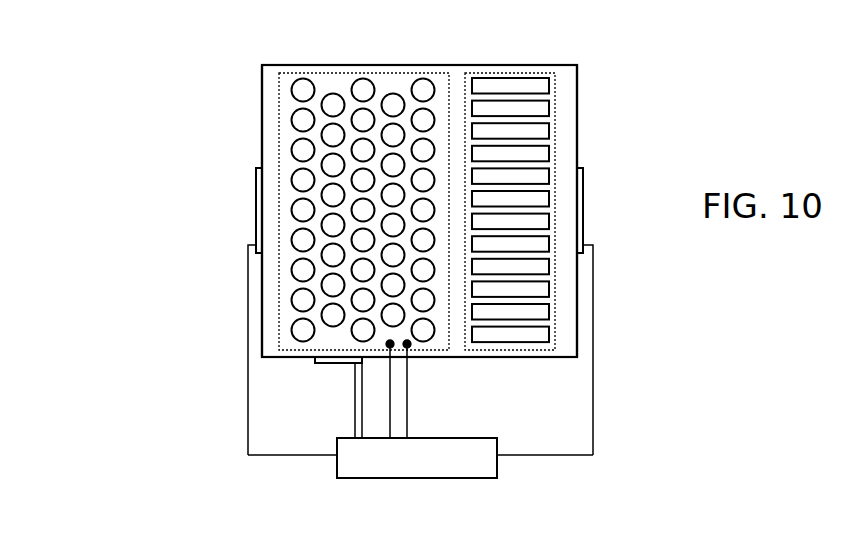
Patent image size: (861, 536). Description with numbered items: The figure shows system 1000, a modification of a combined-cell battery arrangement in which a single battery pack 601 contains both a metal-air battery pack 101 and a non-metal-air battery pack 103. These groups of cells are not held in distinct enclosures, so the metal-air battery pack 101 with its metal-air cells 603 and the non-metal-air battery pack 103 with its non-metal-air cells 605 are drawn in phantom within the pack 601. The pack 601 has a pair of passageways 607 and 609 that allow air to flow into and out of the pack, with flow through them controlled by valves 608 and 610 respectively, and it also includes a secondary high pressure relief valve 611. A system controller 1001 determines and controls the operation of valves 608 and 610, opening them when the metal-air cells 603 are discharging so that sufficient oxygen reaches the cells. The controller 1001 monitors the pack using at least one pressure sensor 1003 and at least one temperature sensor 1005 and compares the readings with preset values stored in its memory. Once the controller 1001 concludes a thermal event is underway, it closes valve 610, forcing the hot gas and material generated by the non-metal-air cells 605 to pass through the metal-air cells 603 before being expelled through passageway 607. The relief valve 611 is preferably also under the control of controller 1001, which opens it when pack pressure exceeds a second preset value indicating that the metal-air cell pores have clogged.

The system 1000 is at (163, 350).
The system controller 1001 is at (476, 478).
The pressure sensor 1003 is at (407, 360).
The temperature sensor 1005 is at (391, 365).
The metal-air battery pack 101 is at (475, 72).
The non-metal-air battery pack 103 is at (432, 72).
The battery pack 601 is at (470, 358).
The metal-air cells 603 is at (510, 153).
The non-metal-air cells 605 is at (393, 103).
The passageway 607 is at (576, 186).
The valve 608 is at (583, 198).
The passageway 609 is at (265, 182).
The valve 610 is at (257, 192).
The secondary high pressure relief valve 611 is at (327, 365).